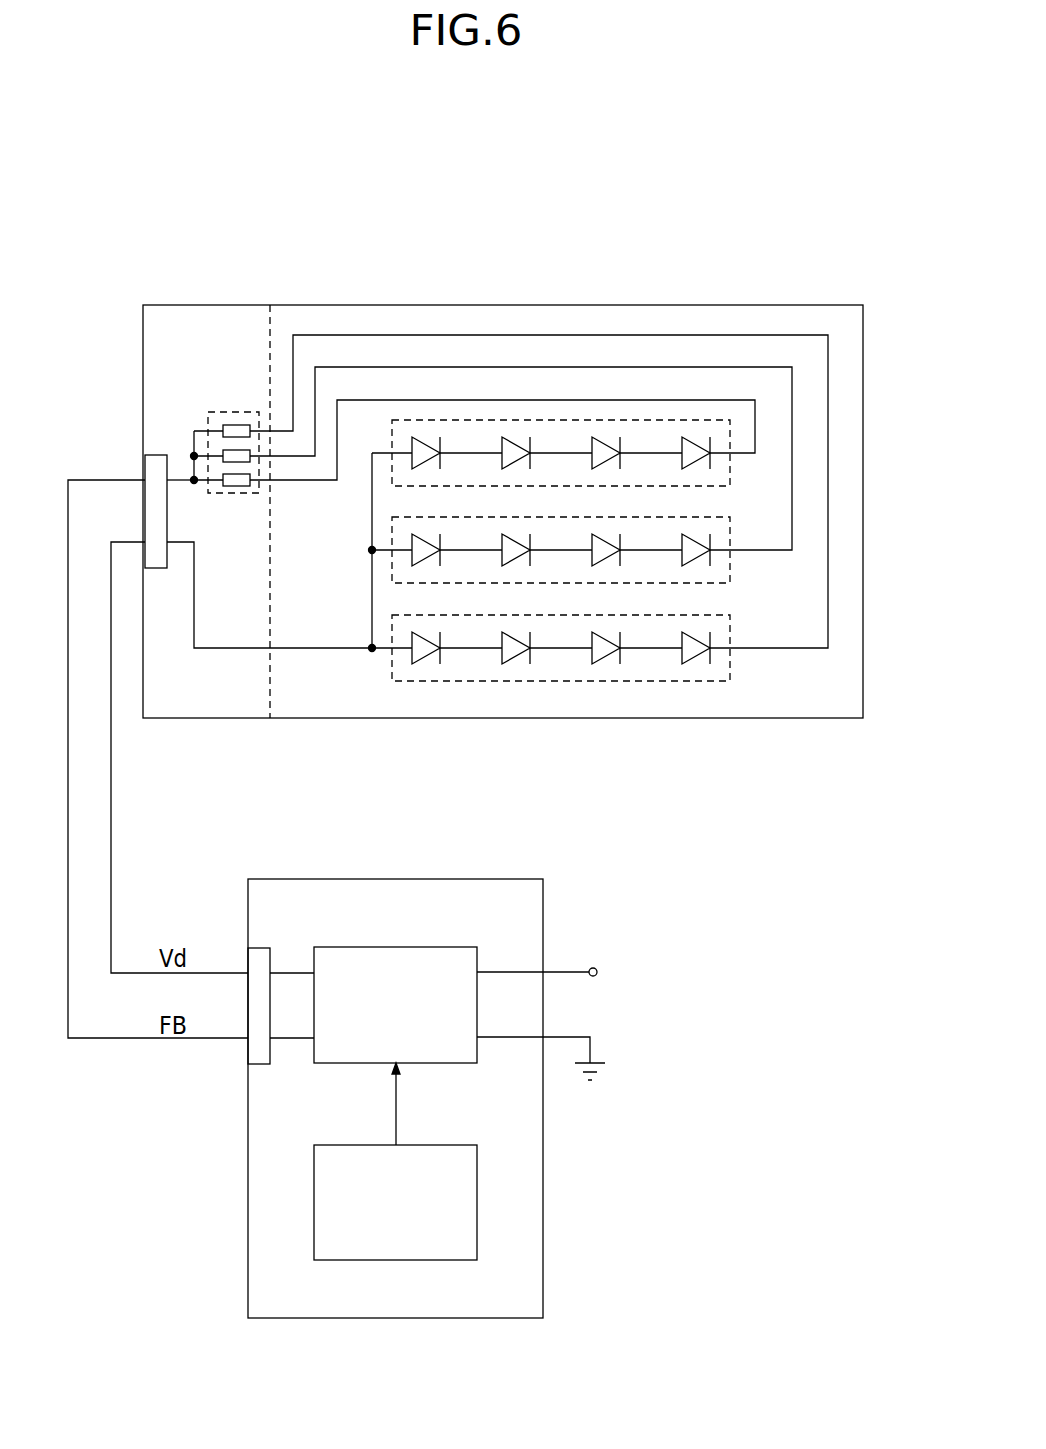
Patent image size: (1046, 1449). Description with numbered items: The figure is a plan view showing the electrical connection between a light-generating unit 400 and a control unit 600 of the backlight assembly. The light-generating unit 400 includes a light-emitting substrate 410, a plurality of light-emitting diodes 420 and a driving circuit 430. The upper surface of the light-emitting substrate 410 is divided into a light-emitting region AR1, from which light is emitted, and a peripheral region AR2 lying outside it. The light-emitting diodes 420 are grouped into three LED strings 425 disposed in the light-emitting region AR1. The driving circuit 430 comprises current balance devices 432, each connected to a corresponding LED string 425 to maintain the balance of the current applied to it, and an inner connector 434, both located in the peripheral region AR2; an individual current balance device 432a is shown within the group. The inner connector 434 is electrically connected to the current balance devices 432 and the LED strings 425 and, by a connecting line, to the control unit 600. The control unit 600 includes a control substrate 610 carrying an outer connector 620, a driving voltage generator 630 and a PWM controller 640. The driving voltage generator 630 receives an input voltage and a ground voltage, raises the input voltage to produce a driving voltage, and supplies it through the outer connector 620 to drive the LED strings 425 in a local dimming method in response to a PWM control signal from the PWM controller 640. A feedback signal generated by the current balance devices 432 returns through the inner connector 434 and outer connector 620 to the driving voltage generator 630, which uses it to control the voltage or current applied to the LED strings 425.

The light-generating unit 400 is at (433, 205).
The light-emitting substrate 410 is at (326, 315).
The light-emitting diodes 420 is at (428, 438).
The LED string 425 is at (550, 420).
The driving circuit 430 is at (285, 246).
The current balance device 432 is at (236, 410).
The resistor 432a is at (236, 493).
The inner connector 434 is at (152, 462).
The control unit 600 is at (135, 1087).
The control substrate 610 is at (272, 1164).
The outer connector 620 is at (245, 1055).
The driving voltage generator 630 is at (323, 1053).
The PWM controller 640 is at (314, 1198).
The light-emitting region AR1 is at (348, 705).
The peripheral region AR2 is at (202, 705).